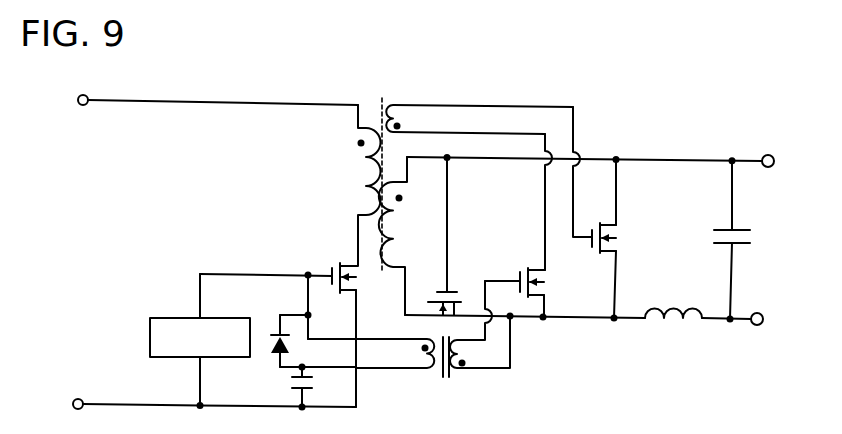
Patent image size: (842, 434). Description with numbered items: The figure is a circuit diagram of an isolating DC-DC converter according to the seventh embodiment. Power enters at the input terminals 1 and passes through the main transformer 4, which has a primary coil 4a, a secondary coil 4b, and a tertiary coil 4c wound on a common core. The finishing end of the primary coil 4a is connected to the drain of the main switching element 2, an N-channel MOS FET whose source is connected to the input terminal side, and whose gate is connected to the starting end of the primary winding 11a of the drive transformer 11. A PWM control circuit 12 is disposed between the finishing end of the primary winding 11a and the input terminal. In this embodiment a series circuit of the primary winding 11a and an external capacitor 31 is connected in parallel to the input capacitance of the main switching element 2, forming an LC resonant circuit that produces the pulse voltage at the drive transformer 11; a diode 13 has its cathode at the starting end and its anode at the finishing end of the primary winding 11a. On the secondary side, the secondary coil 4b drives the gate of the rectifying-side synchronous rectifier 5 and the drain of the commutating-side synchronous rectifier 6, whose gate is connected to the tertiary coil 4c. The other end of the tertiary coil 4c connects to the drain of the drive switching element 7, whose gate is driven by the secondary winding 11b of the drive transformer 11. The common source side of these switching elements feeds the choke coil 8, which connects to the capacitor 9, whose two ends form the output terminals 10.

The input terminal 1 is at (215, 252).
The main switching element 2 is at (286, 335).
The main transformer 4 is at (455, 194).
The primary coil 4a is at (359, 185).
The secondary coil 4b is at (400, 236).
The tertiary coil 4c is at (479, 119).
The rectifying-side synchronous rectifier 5 is at (444, 237).
The commutating-side synchronous rectifier 6 is at (612, 239).
The drive switching element 7 is at (515, 280).
The choke coil 8 is at (673, 301).
The capacitor 9 is at (729, 240).
The output terminals 10 is at (760, 242).
The drive transformer 11 is at (433, 340).
The primary winding of the drive transformer 11a is at (395, 354).
The secondary winding of the drive transformer 11b is at (480, 325).
The PWM control circuit 12 is at (176, 318).
The diode 13 is at (276, 354).
The external capacitor 31 is at (313, 384).